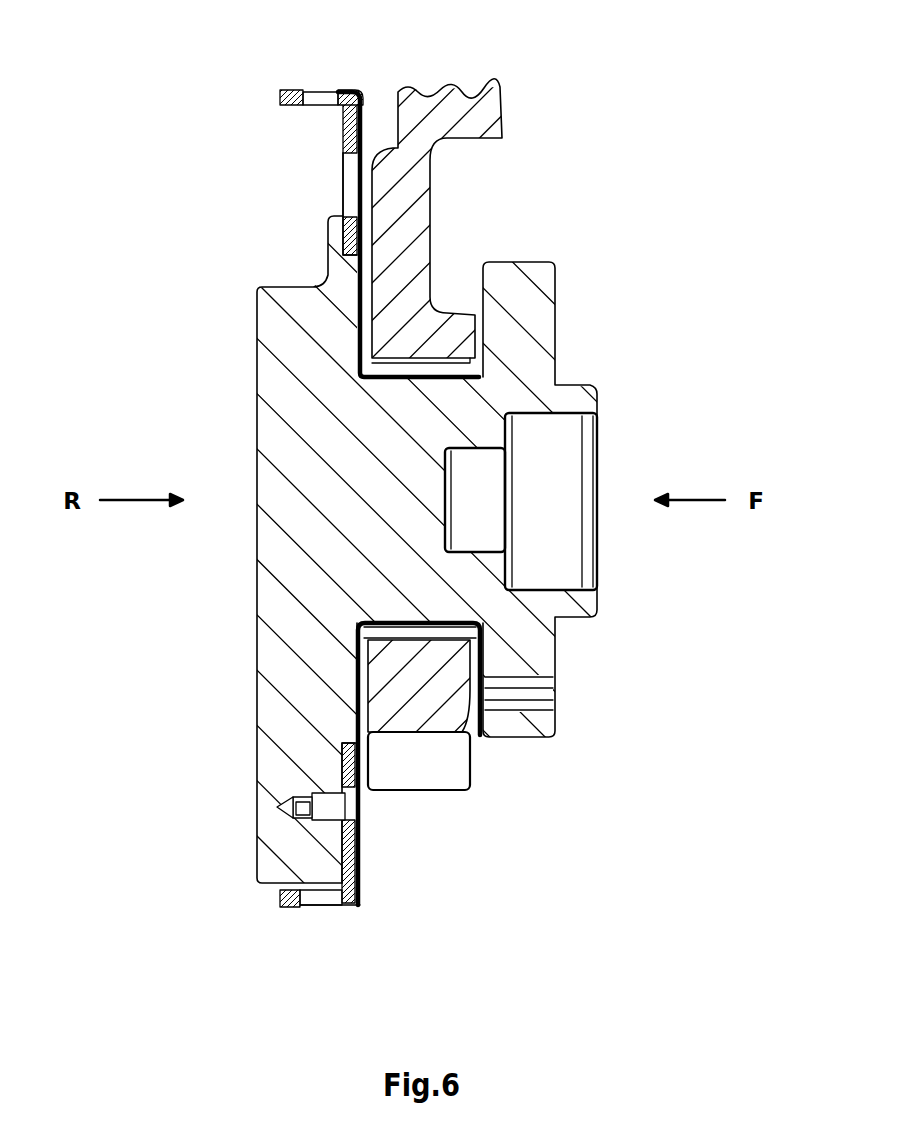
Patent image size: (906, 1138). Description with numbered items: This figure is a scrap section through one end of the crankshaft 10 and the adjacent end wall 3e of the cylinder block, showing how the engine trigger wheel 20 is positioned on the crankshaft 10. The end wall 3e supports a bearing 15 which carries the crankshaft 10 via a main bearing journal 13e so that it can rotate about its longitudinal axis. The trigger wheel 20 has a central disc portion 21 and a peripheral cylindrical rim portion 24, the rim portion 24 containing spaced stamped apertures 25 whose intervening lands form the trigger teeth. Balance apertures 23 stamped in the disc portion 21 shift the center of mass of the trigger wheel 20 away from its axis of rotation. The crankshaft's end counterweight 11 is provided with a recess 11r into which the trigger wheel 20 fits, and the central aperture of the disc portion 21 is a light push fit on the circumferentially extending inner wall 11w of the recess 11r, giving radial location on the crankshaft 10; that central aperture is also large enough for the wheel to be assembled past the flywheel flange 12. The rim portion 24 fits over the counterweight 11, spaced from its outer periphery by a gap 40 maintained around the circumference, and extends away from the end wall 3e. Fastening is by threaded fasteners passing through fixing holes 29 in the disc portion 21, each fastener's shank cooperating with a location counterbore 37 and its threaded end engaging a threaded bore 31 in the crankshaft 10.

The crankshaft 10 is at (252, 387).
The counterweight 11 is at (303, 742).
The recess 11r is at (343, 235).
The inner wall of the recess 11w is at (343, 731).
The flywheel flange 12 is at (510, 713).
The main bearing journal 13e is at (422, 380).
The bearing 15 is at (408, 630).
The engine trigger wheel 20 is at (338, 137).
The central disc portion 21 is at (357, 835).
The balance apertures 23 is at (318, 185).
The cylindrical rim portion 24 is at (297, 92).
The stamped apertures 25 is at (305, 93).
The fixing holes 29 is at (347, 819).
The threaded bore 31 is at (303, 821).
The location counterbore 37 is at (303, 822).
The gap 40 is at (281, 889).
The end wall 3e is at (468, 88).